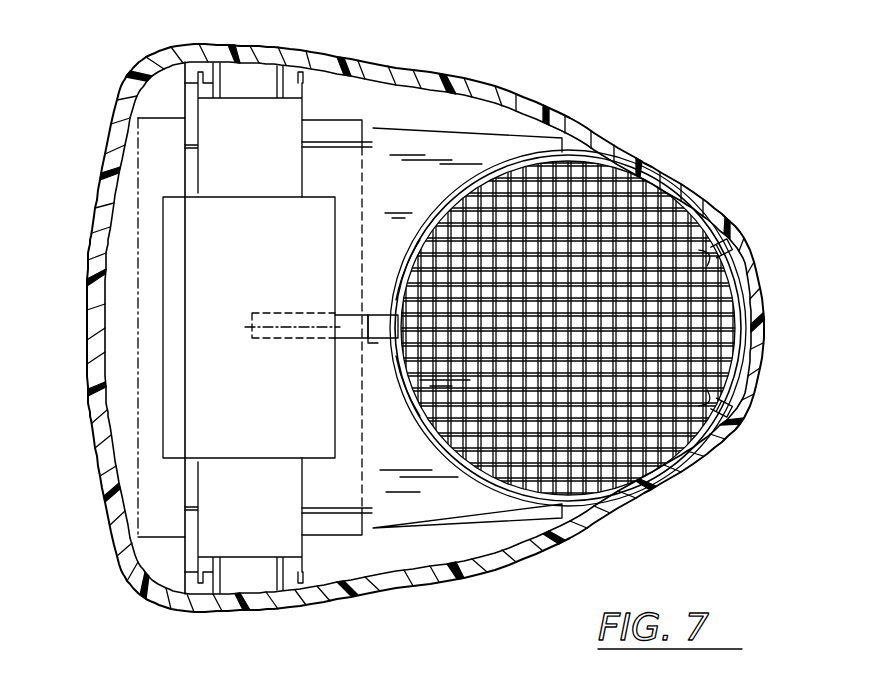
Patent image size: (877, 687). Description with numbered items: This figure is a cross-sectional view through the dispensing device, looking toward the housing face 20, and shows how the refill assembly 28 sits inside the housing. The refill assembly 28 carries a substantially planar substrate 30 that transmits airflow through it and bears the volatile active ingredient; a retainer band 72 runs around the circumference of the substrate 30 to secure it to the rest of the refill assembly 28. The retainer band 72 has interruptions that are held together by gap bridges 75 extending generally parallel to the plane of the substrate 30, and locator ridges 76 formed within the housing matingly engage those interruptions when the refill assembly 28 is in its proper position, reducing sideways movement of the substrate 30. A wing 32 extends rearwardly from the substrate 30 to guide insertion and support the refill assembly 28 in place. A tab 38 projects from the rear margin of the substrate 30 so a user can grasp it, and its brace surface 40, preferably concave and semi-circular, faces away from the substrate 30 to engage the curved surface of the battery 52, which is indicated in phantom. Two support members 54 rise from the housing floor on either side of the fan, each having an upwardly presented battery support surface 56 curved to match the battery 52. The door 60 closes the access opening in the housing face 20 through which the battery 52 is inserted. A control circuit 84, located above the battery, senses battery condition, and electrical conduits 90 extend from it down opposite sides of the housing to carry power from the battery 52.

The housing face 20 is at (88, 357).
The refill assembly 28 is at (657, 180).
The substrate 30 is at (587, 173).
The wing 32 is at (477, 137).
The tab 38 is at (338, 313).
The brace surface 40 is at (360, 320).
The battery 52 is at (138, 275).
The support member 54 is at (348, 147).
The battery support surface 56 is at (330, 142).
The door 60 is at (111, 520).
The retainer band 72 is at (670, 470).
The gap bridge 75 is at (726, 256).
The locator ridge 76 is at (712, 252).
The control circuit 84 is at (185, 215).
The electrical conduit 90 is at (197, 86).